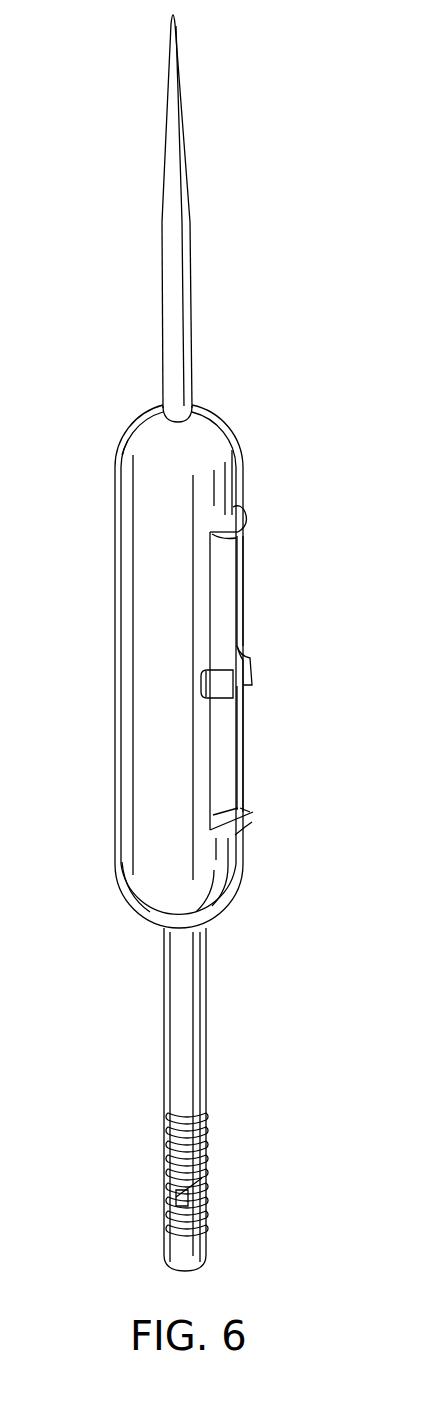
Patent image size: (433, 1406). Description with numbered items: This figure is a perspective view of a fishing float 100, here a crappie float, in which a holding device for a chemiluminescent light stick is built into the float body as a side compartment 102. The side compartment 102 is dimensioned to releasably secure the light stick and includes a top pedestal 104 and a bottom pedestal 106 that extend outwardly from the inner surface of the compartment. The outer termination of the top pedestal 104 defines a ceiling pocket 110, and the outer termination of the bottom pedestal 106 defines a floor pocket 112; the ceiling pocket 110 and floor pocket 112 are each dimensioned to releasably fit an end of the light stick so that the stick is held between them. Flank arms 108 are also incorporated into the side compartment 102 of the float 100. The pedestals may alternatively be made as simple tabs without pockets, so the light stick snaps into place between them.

The fishing float 100 is at (118, 479).
The side compartment 102 is at (228, 607).
The top pedestal 104 is at (238, 510).
The bottom pedestal 106 is at (245, 822).
The flank arms 108 is at (253, 672).
The ceiling pocket 110 is at (233, 540).
The floor pocket 112 is at (242, 806).